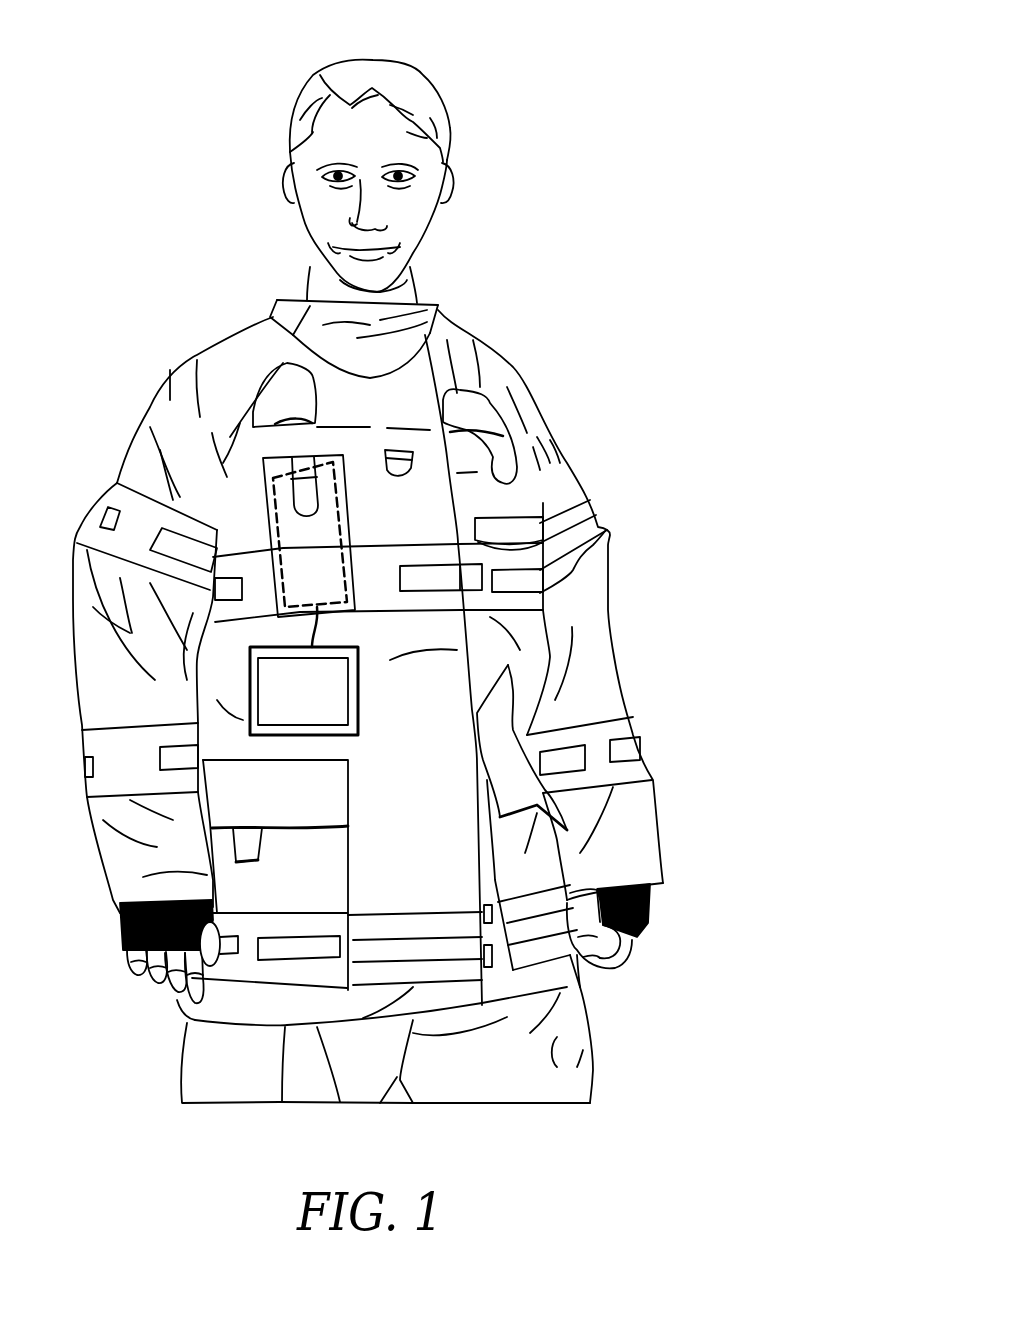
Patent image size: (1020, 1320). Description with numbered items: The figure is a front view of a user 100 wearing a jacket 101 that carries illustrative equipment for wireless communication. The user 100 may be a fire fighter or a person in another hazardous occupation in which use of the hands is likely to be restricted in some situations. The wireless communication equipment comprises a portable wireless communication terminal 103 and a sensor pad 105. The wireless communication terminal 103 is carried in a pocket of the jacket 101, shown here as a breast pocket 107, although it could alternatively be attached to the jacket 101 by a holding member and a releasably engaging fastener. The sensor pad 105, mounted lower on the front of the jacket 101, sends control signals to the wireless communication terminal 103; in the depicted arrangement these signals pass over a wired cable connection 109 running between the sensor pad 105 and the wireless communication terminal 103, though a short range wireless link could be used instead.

The user 100 is at (660, 37).
The jacket 101 is at (465, 365).
The portable wireless communication terminal 103 is at (272, 498).
The sensor pad 105 is at (360, 690).
The breast pocket 107 is at (351, 520).
The cable connection 109 is at (318, 627).